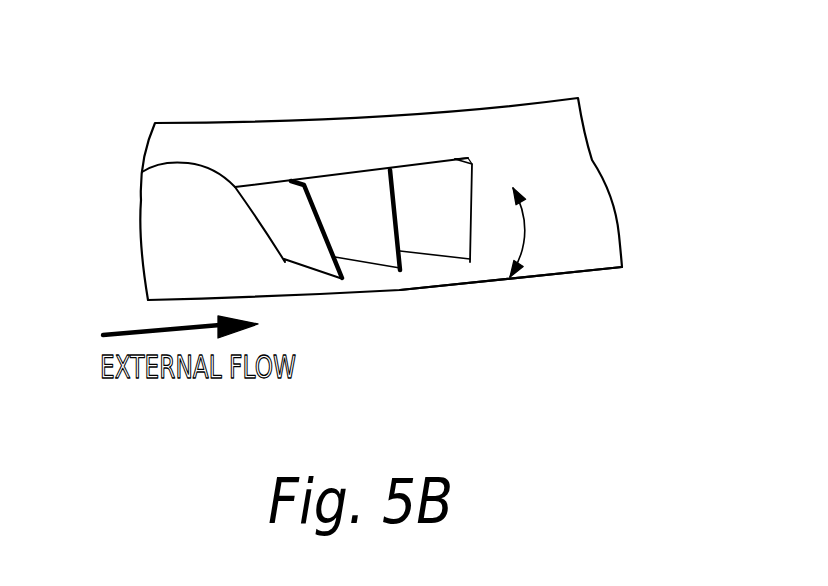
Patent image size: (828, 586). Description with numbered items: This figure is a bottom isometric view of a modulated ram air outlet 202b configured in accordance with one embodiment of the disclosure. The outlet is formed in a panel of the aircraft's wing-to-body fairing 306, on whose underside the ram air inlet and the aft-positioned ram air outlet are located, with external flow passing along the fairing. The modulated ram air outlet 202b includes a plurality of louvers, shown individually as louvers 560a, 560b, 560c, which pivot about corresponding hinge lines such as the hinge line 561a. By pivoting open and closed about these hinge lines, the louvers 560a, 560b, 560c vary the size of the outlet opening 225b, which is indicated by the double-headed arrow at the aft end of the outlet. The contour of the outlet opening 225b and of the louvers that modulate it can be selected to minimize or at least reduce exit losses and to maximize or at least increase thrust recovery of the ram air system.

The wing-to-body fairing 306 is at (228, 142).
The hinge line 561a is at (143, 171).
The louver 560a is at (322, 258).
The louver 560b is at (377, 248).
The louver 560c is at (447, 238).
The outlet opening 225b is at (505, 170).
The modulated ram air outlet 202b is at (490, 292).